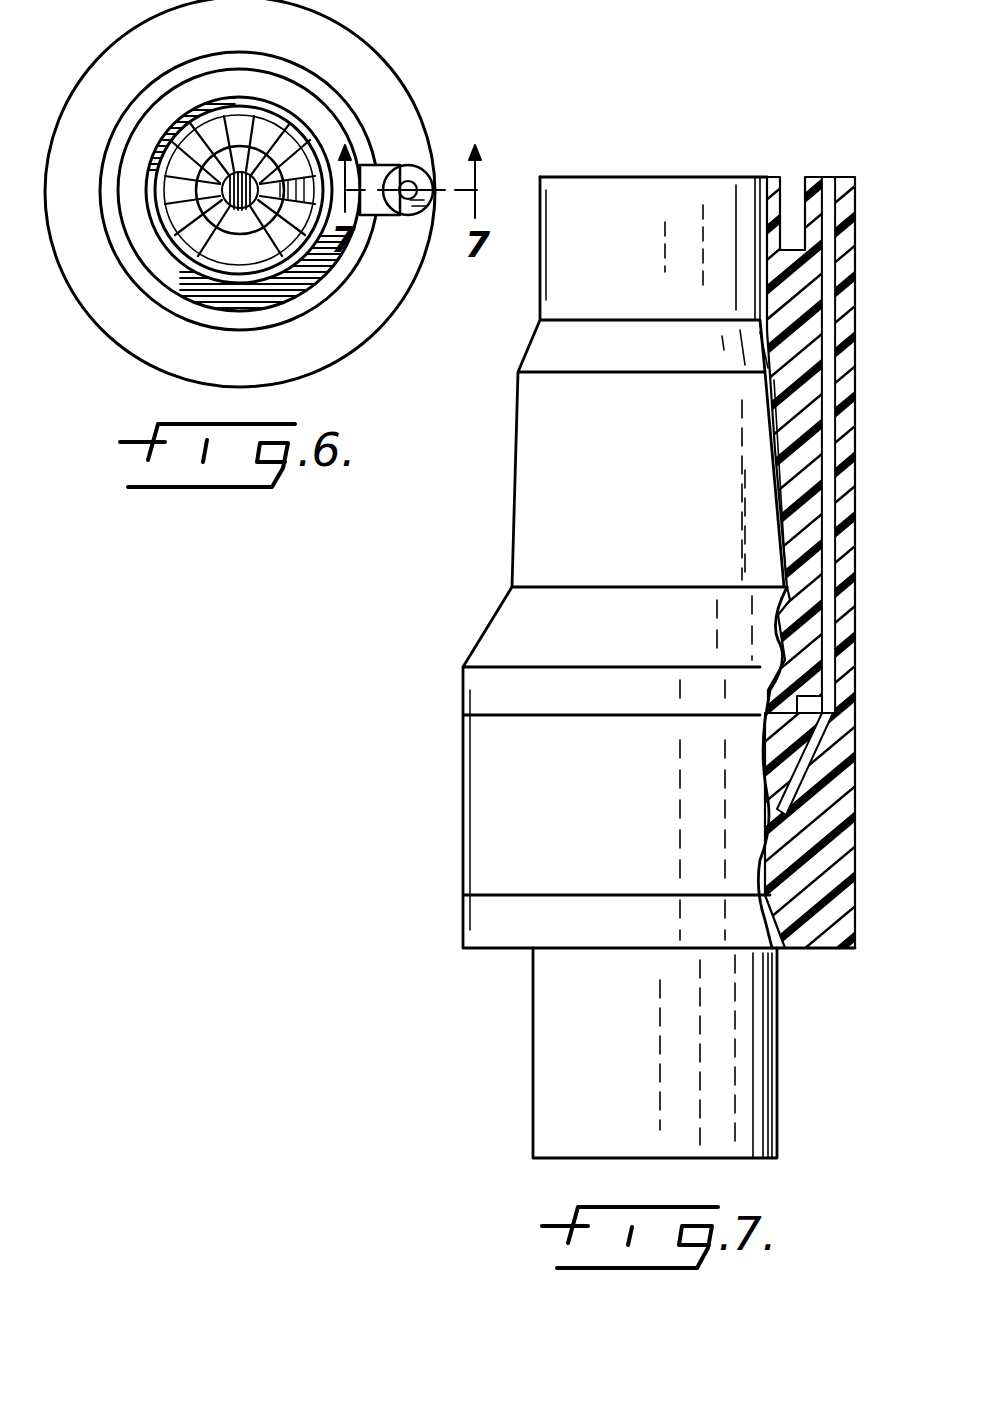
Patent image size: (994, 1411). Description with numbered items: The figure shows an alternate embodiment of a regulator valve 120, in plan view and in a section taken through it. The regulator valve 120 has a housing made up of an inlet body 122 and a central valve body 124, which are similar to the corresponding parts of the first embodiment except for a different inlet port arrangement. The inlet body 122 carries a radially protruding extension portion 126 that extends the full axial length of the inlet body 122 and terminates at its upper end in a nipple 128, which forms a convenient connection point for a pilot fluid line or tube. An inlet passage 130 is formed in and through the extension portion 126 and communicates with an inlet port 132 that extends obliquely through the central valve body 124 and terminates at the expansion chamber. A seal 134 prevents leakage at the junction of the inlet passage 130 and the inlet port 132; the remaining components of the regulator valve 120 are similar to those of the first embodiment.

In FIG. 6, the regulator valve 120 is at (130, 362).
In FIG. 7, the regulator valve 120 is at (507, 514).
In FIG. 6, the inlet body 122 is at (165, 105).
In FIG. 7, the inlet body 122 is at (600, 197).
In FIG. 6, the central valve body 124 is at (346, 358).
In FIG. 7, the central valve body 124 is at (480, 823).
In FIG. 6, the extension portion 126 is at (420, 212).
In FIG. 7, the extension portion 126 is at (858, 212).
In FIG. 6, the nipple 128 is at (390, 165).
In FIG. 7, the nipple 128 is at (805, 195).
In FIG. 6, the inlet passage 130 is at (404, 205).
In FIG. 7, the inlet passage 130 is at (829, 192).
In FIG. 7, the inlet port 132 is at (782, 792).
In FIG. 7, the seal 134 is at (800, 740).